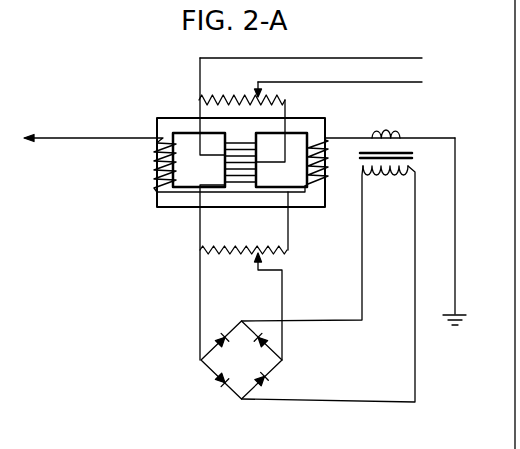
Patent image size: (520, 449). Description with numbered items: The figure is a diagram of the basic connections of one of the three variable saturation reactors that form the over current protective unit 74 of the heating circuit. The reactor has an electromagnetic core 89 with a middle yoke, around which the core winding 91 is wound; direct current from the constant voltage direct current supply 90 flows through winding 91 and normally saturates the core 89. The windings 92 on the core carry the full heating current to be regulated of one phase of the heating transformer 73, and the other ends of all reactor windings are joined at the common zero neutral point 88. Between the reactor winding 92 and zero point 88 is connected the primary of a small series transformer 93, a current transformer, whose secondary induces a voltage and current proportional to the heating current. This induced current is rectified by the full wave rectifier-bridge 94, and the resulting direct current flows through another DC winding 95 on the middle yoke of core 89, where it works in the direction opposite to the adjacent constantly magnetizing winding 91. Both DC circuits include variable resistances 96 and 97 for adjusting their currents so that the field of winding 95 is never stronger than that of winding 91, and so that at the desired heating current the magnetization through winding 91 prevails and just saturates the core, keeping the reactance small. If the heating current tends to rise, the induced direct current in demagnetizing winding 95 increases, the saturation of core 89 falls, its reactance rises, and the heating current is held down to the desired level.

The heating transformer 73 is at (48, 137).
The magnetic amplifier control circuit 74 is at (155, 84).
The common neutral point 88 is at (456, 296).
The electromagnetic core 89 is at (327, 121).
The constant voltage direct current supply 90 is at (360, 60).
The core winding 91 is at (260, 148).
The windings 92 is at (157, 176).
The series transformer 93 is at (413, 159).
The full wave rectifier-bridge 94 is at (241, 360).
The DC winding 95 is at (226, 172).
The variable resistance 96 is at (217, 98).
The variable resistance 97 is at (230, 250).